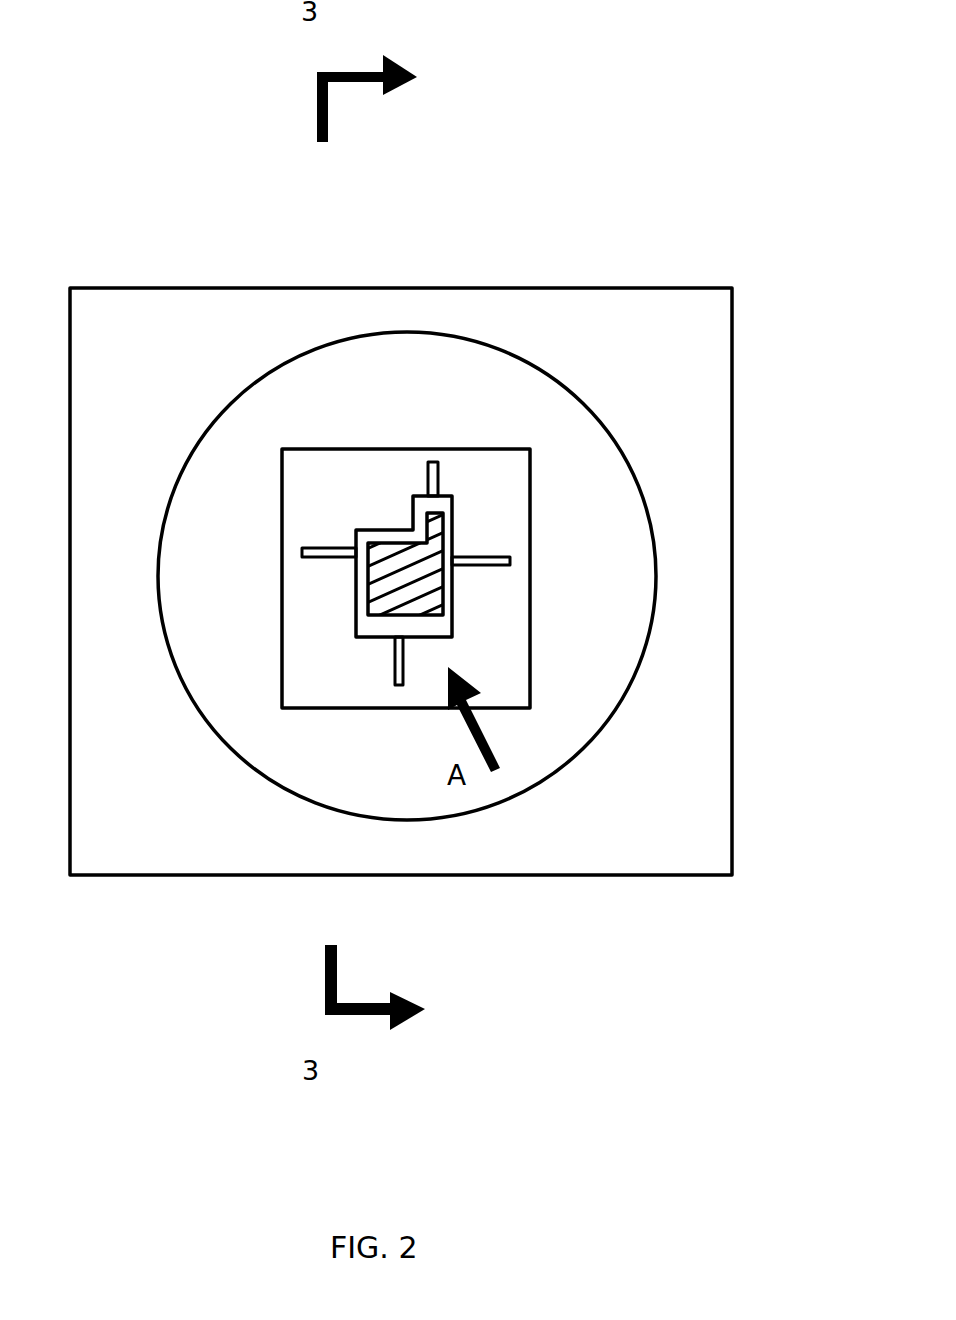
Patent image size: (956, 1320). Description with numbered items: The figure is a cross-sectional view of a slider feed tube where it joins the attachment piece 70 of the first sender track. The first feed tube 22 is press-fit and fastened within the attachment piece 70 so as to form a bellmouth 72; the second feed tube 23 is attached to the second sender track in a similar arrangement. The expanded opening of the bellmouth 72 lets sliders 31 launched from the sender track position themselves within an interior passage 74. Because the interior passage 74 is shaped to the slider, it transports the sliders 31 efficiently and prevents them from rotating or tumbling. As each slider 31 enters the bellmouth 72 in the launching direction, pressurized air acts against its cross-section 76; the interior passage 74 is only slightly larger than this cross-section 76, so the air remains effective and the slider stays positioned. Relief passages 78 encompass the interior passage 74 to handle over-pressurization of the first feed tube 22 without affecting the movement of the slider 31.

The attachment piece 70 is at (128, 288).
The bellmouth 72 is at (406, 334).
The first feed tube 22 is at (508, 449).
The second feed tube 23 is at (547, 458).
The interior passage 74 is at (452, 600).
The cross-section 76 is at (387, 562).
The relief passages 78 is at (492, 549).
The slider 31 is at (392, 614).